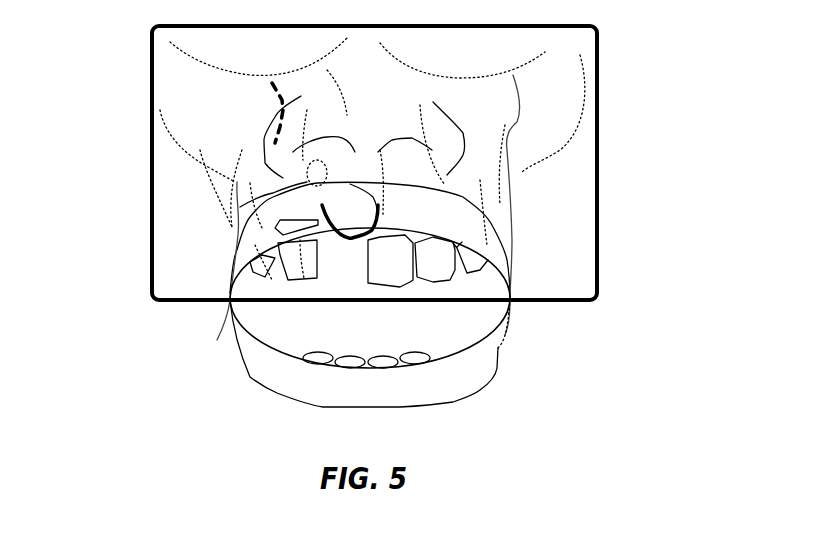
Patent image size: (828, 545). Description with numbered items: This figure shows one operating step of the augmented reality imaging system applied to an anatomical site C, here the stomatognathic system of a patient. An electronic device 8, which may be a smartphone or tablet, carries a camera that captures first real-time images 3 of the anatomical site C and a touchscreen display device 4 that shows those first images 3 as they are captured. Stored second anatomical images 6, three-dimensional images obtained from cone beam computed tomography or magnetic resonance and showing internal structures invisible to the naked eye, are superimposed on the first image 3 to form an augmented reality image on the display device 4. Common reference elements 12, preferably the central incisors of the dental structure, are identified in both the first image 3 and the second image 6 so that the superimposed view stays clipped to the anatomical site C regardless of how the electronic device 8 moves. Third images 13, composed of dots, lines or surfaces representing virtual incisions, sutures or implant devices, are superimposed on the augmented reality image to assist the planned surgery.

The electronic device 8 is at (152, 73).
The display device 4 is at (583, 212).
The second anatomical images 6 is at (510, 130).
The first real-time images 3 is at (228, 300).
The common reference elements 12 is at (287, 270).
The third images 13 is at (345, 243).
The anatomical site C is at (508, 333).